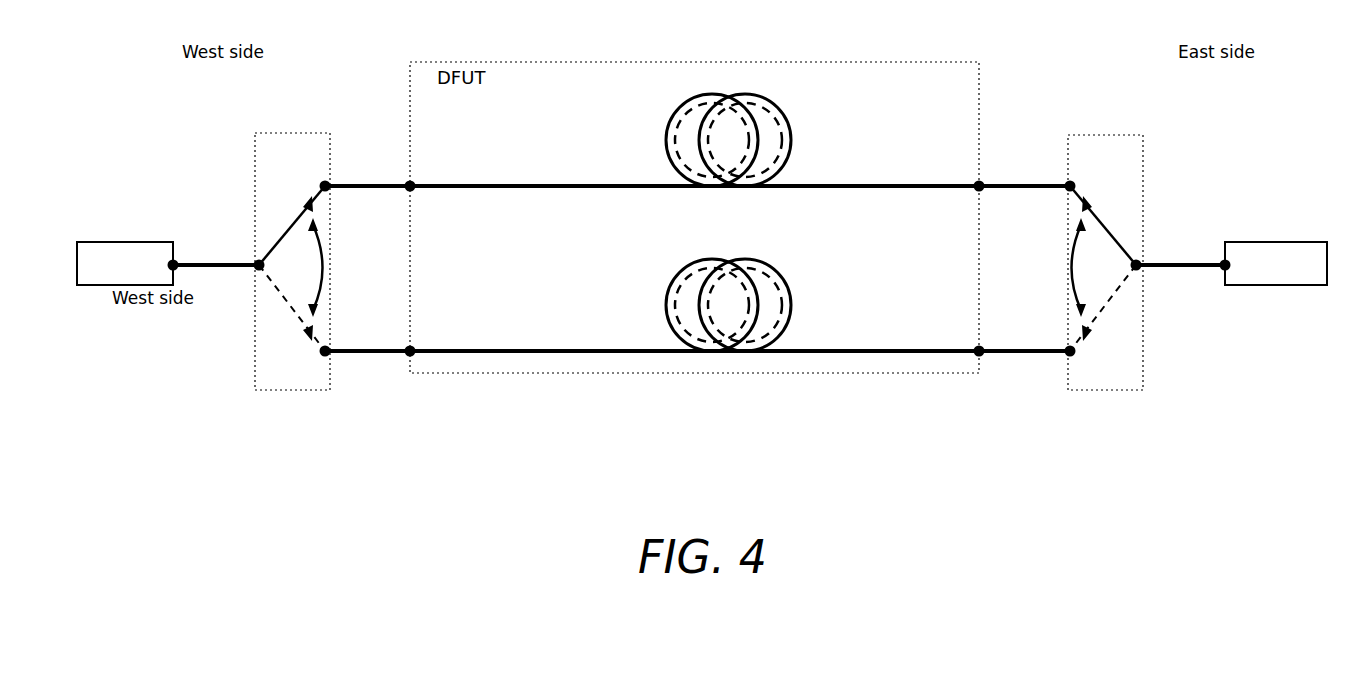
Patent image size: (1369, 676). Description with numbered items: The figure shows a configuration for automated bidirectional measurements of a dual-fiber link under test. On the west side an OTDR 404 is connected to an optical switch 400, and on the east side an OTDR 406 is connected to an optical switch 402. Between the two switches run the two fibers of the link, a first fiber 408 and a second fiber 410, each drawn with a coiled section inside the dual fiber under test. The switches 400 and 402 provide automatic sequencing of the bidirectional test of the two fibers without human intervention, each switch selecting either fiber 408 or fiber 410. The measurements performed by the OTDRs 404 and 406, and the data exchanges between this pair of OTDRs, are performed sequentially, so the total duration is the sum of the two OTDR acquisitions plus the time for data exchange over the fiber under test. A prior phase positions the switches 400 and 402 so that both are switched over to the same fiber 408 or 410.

The switch 400 is at (301, 134).
The switch 402 is at (1113, 134).
The OTDR 404 is at (130, 241).
The OTDR 406 is at (1273, 241).
The fiber 408 is at (620, 183).
The fiber 410 is at (620, 347).